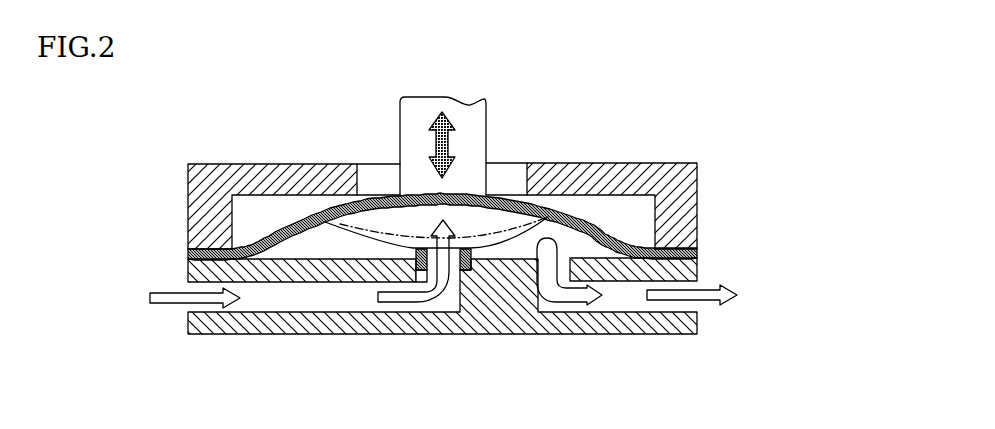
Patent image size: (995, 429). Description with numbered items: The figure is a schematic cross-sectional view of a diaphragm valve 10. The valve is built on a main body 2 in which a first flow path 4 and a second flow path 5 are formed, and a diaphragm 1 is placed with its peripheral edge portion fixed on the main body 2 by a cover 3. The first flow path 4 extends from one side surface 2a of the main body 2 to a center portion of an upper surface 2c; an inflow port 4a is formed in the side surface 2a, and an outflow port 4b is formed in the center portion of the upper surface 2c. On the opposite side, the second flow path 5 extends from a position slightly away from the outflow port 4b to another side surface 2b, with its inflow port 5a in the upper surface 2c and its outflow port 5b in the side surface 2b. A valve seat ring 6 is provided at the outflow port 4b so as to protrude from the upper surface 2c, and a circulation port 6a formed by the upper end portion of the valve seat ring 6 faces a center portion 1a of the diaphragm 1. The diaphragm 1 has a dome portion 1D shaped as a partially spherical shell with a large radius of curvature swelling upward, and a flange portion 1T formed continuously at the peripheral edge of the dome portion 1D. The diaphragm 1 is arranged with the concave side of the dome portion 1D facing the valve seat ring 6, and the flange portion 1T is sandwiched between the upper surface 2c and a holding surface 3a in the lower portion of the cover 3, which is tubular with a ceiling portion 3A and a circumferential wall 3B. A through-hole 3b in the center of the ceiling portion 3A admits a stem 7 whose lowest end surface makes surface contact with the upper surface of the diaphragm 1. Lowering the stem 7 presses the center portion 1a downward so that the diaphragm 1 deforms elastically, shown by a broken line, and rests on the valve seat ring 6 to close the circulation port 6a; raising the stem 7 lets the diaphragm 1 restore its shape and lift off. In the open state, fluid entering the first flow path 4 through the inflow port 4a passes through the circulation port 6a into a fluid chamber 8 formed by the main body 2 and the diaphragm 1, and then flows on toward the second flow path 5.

The diaphragm valve 10 is at (677, 122).
The diaphragm 1 is at (282, 237).
The center portion of the diaphragm 1a is at (423, 193).
The dome portion 1D is at (377, 200).
The flange portion 1T is at (210, 247).
The main body 2 is at (288, 327).
The one side surface of the main body 2a is at (188, 331).
The another side surface of the main body 2b is at (703, 320).
The upper surface of the main body 2c is at (592, 243).
The cover 3 is at (480, 171).
The ceiling portion 3A is at (587, 167).
The circumferential wall 3B is at (690, 200).
The housing clamping surface 3a is at (192, 257).
The through-hole 3b is at (518, 178).
The first flow path 4 is at (246, 303).
The inflow port of the first flow path 4a is at (197, 308).
The outflow port of the first flow path 4b is at (425, 292).
The second flow path 5 is at (627, 302).
The inflow port of the second flow path 5a is at (545, 286).
The outflow port of the second flow path 5b is at (690, 305).
The valve seat ring 6 is at (417, 270).
The circulation port 6a is at (445, 282).
The stem 7 is at (477, 120).
The fluid chamber 8 is at (333, 244).